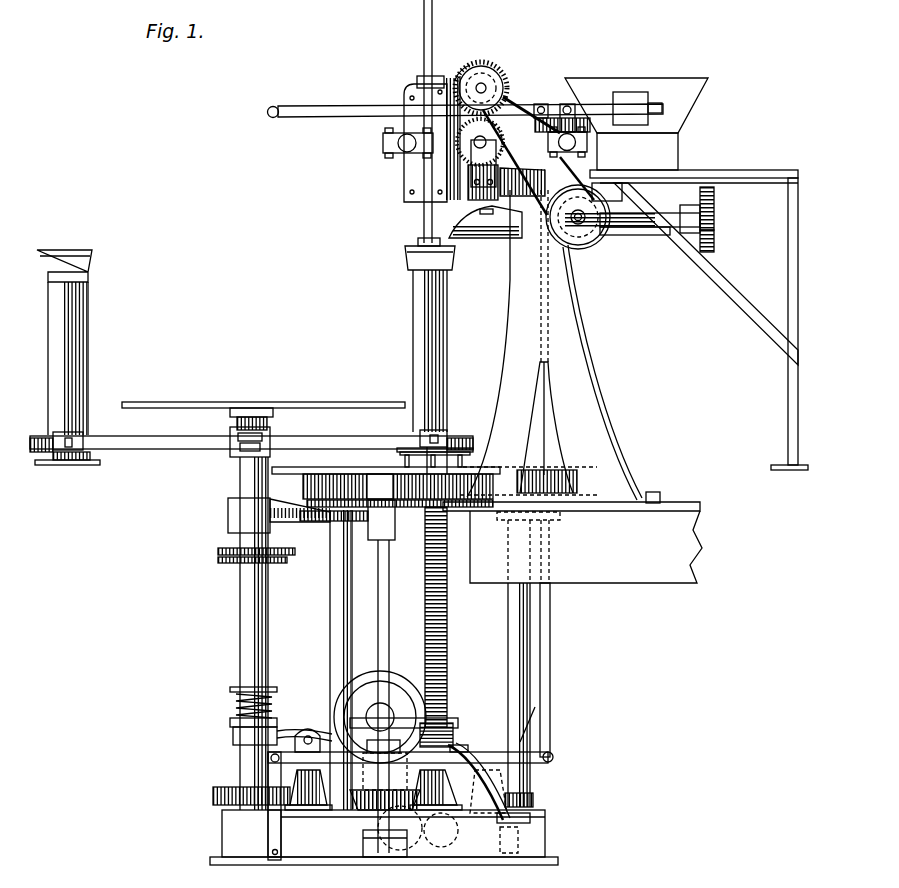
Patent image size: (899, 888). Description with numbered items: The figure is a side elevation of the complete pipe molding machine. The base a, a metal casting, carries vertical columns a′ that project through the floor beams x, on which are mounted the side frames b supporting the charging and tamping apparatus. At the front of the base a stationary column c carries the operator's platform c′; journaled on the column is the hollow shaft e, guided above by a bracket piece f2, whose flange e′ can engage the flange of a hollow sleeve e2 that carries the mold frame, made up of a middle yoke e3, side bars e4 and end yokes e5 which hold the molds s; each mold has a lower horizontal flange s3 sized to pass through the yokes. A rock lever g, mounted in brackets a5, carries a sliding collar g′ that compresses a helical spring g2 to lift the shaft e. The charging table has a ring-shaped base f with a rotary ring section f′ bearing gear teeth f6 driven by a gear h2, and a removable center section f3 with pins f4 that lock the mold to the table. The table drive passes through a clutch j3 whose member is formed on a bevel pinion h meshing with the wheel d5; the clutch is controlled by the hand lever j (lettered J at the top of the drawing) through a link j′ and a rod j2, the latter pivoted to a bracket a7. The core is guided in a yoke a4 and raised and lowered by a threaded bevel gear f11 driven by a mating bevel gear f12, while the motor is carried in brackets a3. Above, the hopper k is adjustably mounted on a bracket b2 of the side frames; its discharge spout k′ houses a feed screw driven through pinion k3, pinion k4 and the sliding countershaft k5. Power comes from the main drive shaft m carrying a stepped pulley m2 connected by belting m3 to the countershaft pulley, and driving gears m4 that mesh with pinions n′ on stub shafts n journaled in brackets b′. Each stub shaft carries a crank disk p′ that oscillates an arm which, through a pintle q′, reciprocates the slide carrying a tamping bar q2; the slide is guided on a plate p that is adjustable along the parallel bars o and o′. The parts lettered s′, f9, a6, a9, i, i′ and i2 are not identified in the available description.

The tamping bar q2 is at (423, 30).
The pintle q′ is at (418, 80).
The plate p is at (404, 190).
The parallel bar o is at (404, 148).
The hand lever J is at (335, 108).
The stepped pulley m2 is at (490, 63).
The driving gear m4 is at (462, 72).
The main drive shaft m is at (489, 84).
The belting m3 is at (532, 113).
The stub shaft n is at (479, 140).
The pinion n′ is at (500, 150).
The bracket b′ is at (470, 168).
The parallel bar o′ is at (571, 132).
The hopper k is at (698, 100).
The bracket b2 is at (735, 166).
The countershaft k5 is at (664, 213).
The pinion k4 is at (714, 216).
The pinion k3 is at (714, 242).
The pulley i is at (583, 228).
The discharge spout k′ is at (490, 236).
The side frame b is at (580, 330).
The link j′ is at (544, 405).
The beam x is at (660, 584).
The column cap s′ is at (90, 264).
The mold s is at (78, 372).
The platform c′ is at (211, 402).
The stationary column c is at (232, 416).
The middle yoke section e3 is at (272, 436).
The side arm e4 is at (165, 436).
The end yoke e5 is at (50, 438).
The horizontal flange s3 is at (85, 465).
The removable table section f3 is at (470, 449).
The pin f4 is at (463, 461).
The rotary ring section f′ is at (312, 462).
The gear teeth f6 is at (303, 487).
The gear h2 is at (377, 472).
The ring-shaped base piece f is at (395, 520).
The bracket piece f2 is at (228, 520).
The hollow sleeve e2 is at (218, 551).
The flange e′ is at (218, 561).
The hollow shaft e is at (268, 634).
The crank disk p′ is at (390, 628).
The screw f9 is at (447, 645).
The vertical column a′ is at (330, 666).
The hand lever j is at (551, 727).
The rod j2 is at (532, 761).
The clutch j3 is at (466, 747).
The base a is at (396, 690).
The bevel pinion h is at (360, 812).
The worm wheel d5 is at (363, 845).
The gear a6 is at (412, 842).
The yoke a4 is at (455, 832).
The bracket a3 is at (500, 775).
The bevel gear f11 is at (482, 758).
The bevel gear f12 is at (503, 819).
The bearing i2 is at (518, 843).
The collar i′ is at (533, 799).
The bracket a7 is at (280, 838).
The gear a9 is at (213, 790).
The helical spring g2 is at (230, 706).
The sliding collar g′ is at (278, 728).
The rock lever g is at (302, 724).
The bracket a5 is at (318, 724).